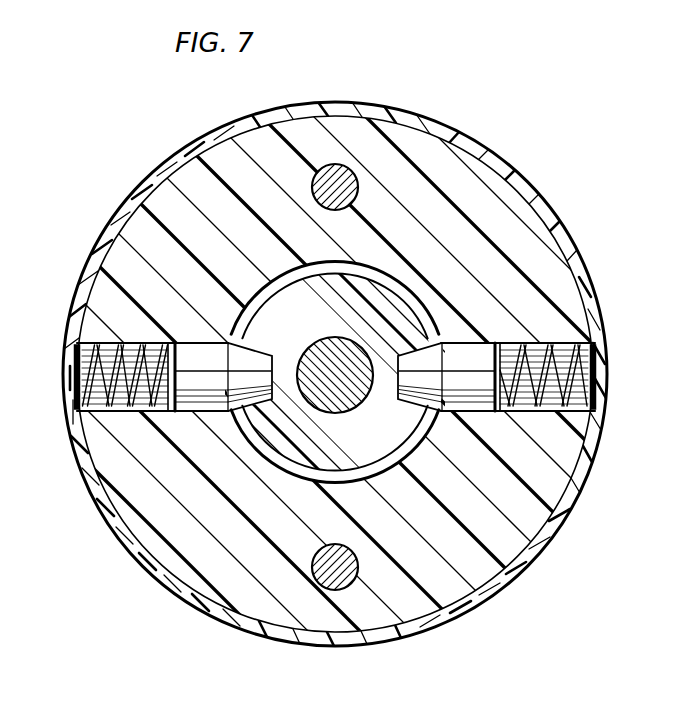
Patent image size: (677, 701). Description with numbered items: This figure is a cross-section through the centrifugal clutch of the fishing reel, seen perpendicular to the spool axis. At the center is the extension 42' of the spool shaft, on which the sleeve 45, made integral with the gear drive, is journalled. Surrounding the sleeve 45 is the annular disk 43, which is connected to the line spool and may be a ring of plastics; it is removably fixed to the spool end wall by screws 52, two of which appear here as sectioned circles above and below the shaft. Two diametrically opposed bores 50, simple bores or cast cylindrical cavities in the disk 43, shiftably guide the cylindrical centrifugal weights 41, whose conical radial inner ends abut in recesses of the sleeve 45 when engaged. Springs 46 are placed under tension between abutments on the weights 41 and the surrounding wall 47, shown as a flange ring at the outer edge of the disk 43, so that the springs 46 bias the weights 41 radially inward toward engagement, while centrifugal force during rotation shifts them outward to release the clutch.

The weights 41 is at (347, 398).
The extension of the spool shaft 42' is at (335, 391).
The disk 43 is at (338, 375).
The sleeve 45 is at (332, 397).
The springs 46 is at (333, 360).
The surrounding wall 47 is at (321, 374).
The bores 50 is at (364, 372).
The screws 52 is at (344, 378).